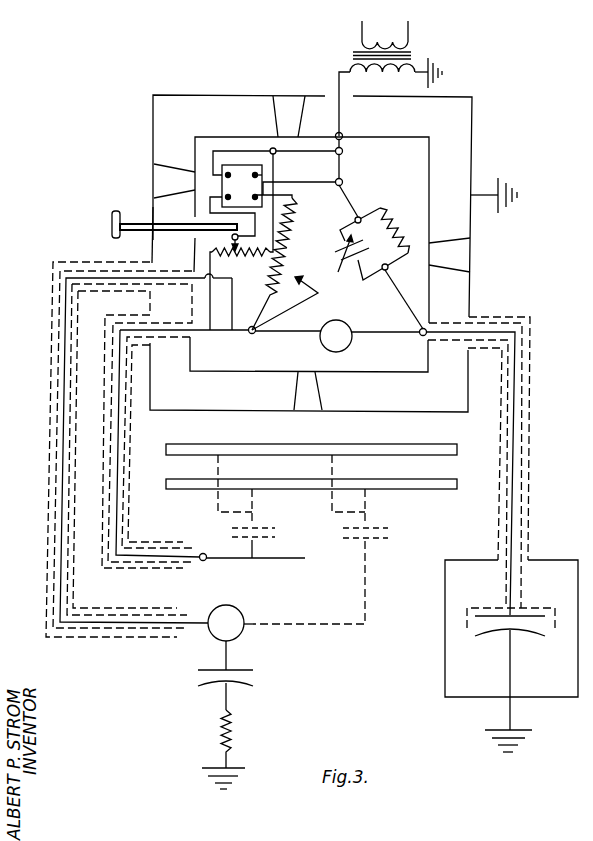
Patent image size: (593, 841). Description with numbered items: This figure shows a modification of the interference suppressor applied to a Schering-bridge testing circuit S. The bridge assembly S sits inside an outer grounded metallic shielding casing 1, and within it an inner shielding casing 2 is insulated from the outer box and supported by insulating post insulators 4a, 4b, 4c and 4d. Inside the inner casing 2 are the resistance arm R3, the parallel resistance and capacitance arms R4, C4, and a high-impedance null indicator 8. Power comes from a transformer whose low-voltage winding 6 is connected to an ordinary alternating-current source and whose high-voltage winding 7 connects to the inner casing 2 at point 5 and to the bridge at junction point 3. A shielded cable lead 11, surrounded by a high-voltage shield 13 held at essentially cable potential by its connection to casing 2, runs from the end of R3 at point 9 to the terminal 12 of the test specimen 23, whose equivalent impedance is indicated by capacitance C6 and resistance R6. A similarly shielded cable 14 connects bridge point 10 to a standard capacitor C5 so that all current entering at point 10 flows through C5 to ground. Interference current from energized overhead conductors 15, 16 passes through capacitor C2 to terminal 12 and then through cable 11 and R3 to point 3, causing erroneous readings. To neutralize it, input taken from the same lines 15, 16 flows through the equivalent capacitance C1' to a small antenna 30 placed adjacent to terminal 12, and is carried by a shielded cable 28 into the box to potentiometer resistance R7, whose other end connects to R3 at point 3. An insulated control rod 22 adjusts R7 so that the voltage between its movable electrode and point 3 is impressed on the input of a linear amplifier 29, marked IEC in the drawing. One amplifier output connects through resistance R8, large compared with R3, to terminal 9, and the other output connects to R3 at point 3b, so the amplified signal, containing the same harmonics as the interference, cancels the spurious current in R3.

The outer grounded metallic shielding casing 1 is at (475, 138).
The inner shielding casing 2 is at (430, 181).
The junction point 3 is at (343, 182).
The point on resistance R3 3b is at (343, 151).
The insulating post insulator 4a is at (275, 116).
The insulating post insulator 4b is at (170, 174).
The insulating post insulator 4c is at (312, 393).
The insulating post insulator 4d is at (458, 251).
The connection point to inner shielding casing 5 is at (345, 131).
The low-voltage winding 6 is at (410, 33).
The high-voltage winding 7 is at (350, 67).
The null indicator 8 is at (322, 340).
The terminal of resistance R3 9 is at (248, 332).
The bridge connection point 10 is at (420, 334).
The shielded cable lead 11 is at (62, 356).
The terminal of the specimen 12 is at (242, 613).
The high-voltage shield 13 is at (60, 399).
The shielded cable 14 is at (515, 401).
The energized conductor 15 is at (398, 444).
The energized conductor 16 is at (423, 489).
The insulated potentiometer control rod 22 is at (155, 222).
The test specimen 23 is at (194, 730).
The shielded cable 28 is at (130, 488).
The linear amplifier 29 is at (300, 178).
The antenna 30 is at (268, 559).
The equivalent capacitance C1' is at (265, 506).
The capacitor C2 is at (390, 538).
The parallel capacitance arm C4 is at (375, 257).
The standard capacitor C5 is at (495, 620).
The equivalent capacitance of specimen C6 is at (250, 679).
The resistance arm R3 is at (289, 251).
The resistance arm R4 is at (392, 221).
The equivalent resistance of specimen R6 is at (232, 728).
The potentiometer resistance R7 is at (241, 242).
The resistance R8 is at (290, 212).
The Schering-bridge assembly S is at (412, 180).
The electrode connection IEC is at (222, 183).